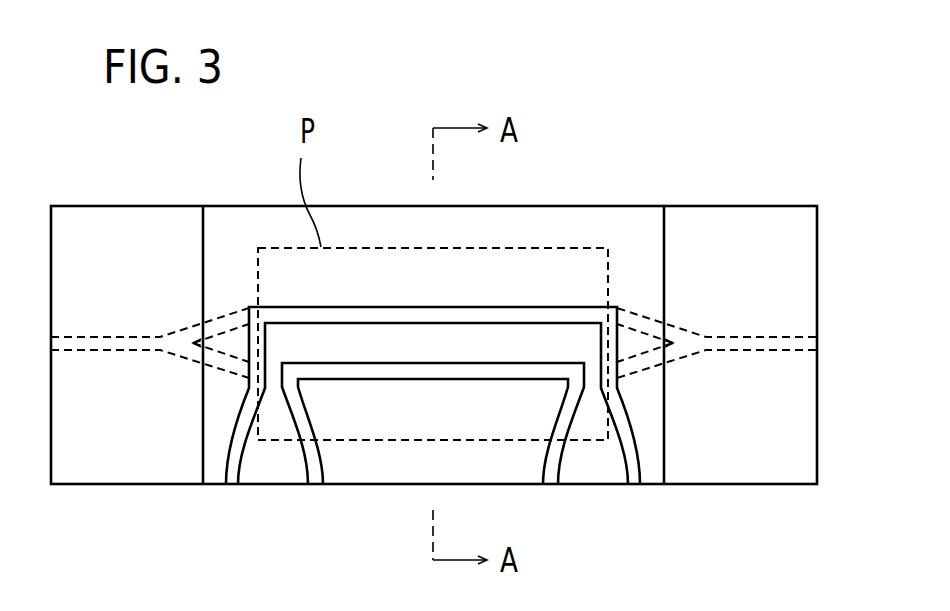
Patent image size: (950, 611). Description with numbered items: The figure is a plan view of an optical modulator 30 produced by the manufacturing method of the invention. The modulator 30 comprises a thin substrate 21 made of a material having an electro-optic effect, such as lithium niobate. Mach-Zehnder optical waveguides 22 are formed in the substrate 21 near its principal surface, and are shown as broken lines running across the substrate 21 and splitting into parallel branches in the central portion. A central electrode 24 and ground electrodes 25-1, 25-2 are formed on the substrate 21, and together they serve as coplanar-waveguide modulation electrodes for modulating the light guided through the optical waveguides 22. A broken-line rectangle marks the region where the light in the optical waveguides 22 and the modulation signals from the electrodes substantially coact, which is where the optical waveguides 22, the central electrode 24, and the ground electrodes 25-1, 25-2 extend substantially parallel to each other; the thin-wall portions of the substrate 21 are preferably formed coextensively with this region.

The optical modulator 30 is at (780, 122).
The thin substrate 21 is at (760, 429).
The Mach-Zehnder optical waveguides 22 is at (643, 327).
The central electrode 24 is at (272, 465).
The ground electrode 25-1 is at (365, 465).
The ground electrode 25-2 is at (578, 225).